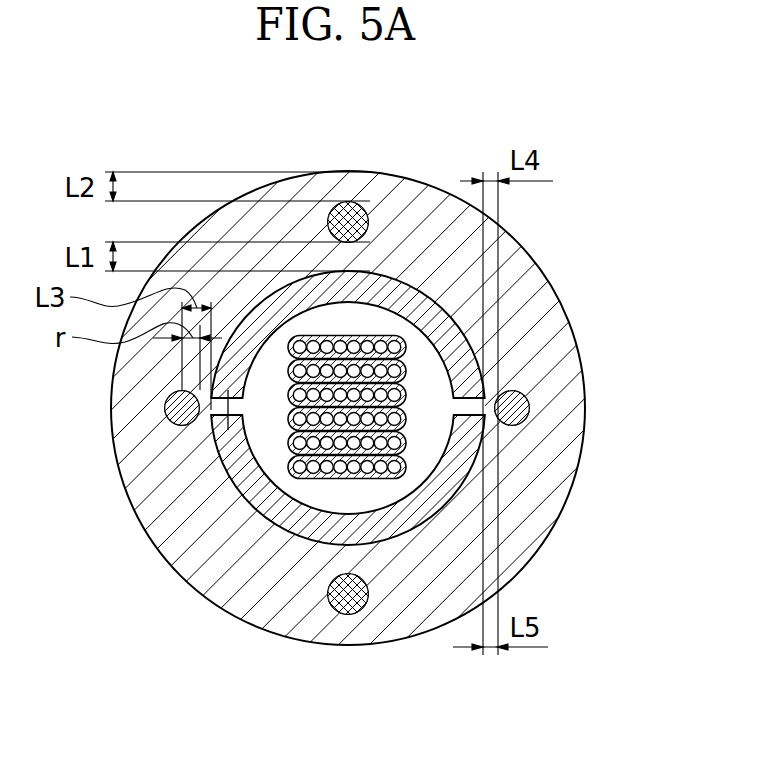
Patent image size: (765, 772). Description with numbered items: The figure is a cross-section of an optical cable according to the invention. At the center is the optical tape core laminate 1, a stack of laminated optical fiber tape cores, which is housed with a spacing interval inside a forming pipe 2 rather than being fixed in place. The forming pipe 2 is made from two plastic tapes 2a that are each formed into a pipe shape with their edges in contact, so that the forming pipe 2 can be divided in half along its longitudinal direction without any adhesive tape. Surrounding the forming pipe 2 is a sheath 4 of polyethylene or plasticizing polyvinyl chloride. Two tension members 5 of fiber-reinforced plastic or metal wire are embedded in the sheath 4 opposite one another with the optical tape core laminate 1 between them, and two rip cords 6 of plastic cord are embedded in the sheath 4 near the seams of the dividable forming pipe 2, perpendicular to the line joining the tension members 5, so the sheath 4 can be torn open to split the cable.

The optical tape core laminate 1 is at (296, 487).
The forming pipe 2 is at (375, 416).
The plastic tape 2a is at (213, 430).
The sheath 4 is at (565, 490).
The tension member 5 is at (348, 201).
The rip cord 6 is at (166, 412).